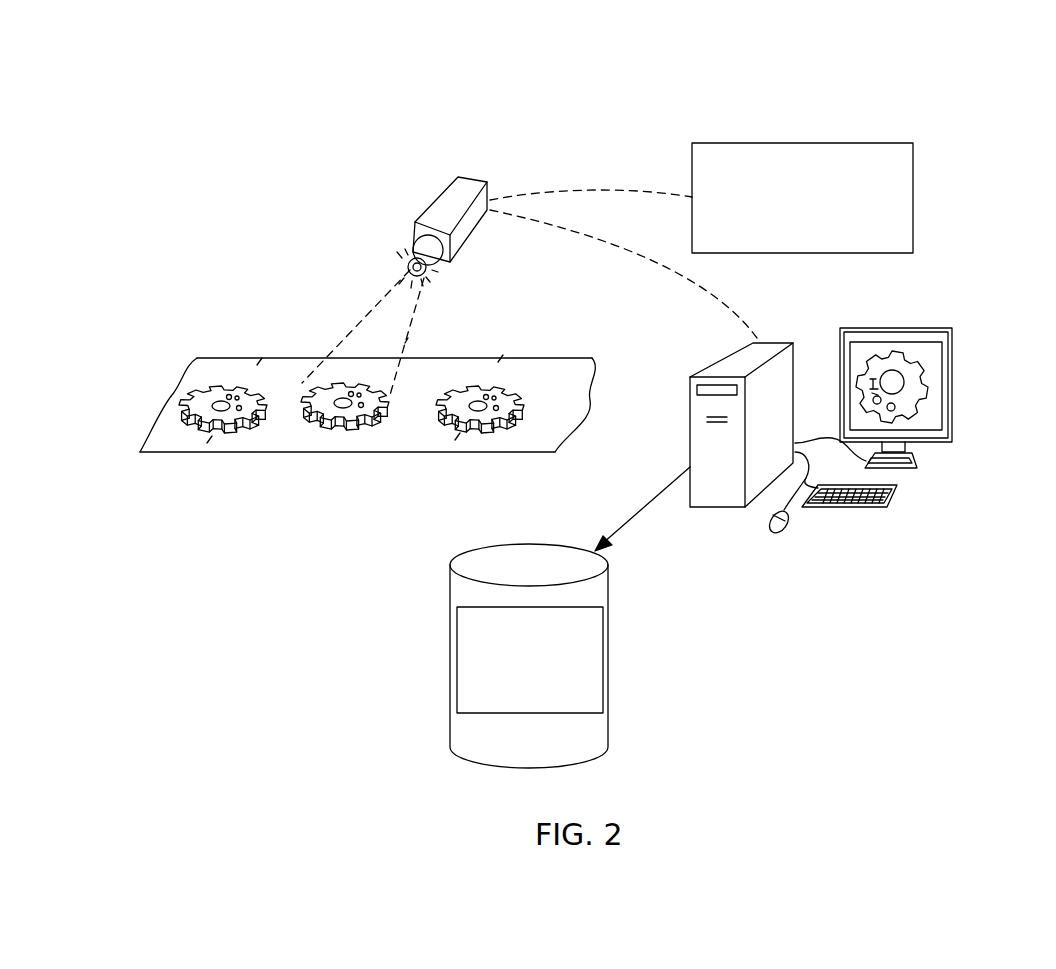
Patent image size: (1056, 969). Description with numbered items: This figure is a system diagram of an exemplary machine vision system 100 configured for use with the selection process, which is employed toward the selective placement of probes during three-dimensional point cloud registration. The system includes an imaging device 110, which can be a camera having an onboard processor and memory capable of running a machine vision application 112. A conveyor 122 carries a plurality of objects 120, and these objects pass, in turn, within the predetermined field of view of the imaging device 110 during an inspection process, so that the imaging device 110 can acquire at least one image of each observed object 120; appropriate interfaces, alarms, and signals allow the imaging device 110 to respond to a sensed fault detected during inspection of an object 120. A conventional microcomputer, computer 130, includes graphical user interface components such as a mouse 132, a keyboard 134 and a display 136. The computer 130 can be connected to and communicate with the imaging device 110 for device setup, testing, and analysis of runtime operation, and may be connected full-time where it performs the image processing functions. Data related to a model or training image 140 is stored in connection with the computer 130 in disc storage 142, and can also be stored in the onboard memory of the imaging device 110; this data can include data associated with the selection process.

The machine vision system 100 is at (703, 110).
The imaging device 110 is at (438, 200).
The machine vision application 112 is at (757, 143).
The object 120 is at (232, 385).
The conveyor 122 is at (265, 456).
The computer 130 is at (778, 340).
The mouse 132 is at (790, 527).
The keyboard 134 is at (872, 508).
The display 136 is at (953, 390).
The training image 140 is at (599, 647).
The disc storage 142 is at (610, 588).